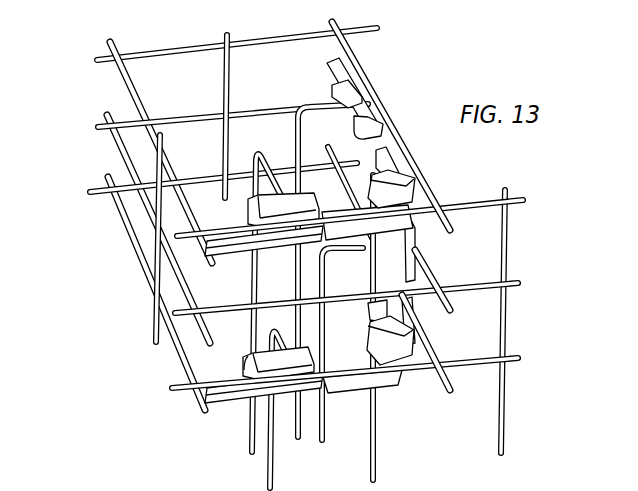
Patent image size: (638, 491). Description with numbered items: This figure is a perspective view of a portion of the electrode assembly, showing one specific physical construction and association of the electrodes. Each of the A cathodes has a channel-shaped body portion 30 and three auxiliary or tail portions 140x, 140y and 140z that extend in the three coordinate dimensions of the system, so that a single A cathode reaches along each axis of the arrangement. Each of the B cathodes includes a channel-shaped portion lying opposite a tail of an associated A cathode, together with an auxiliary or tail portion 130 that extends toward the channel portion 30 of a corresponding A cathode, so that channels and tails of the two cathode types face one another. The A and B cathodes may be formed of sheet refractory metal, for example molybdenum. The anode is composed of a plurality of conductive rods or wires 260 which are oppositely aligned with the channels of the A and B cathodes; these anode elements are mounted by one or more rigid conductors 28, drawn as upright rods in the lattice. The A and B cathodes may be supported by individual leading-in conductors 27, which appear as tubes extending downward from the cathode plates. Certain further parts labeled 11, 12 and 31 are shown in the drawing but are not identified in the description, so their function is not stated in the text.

The cable clip 11 is at (418, 188).
The cable clip 12 is at (378, 127).
The leading-in conductors 27 is at (275, 448).
The rigid conductors 28 is at (223, 78).
The channel-shaped body portion 30 is at (392, 350).
The clip bend 31 is at (247, 362).
The auxiliary or tail portion 130 is at (230, 393).
The auxiliary or tail portion 140x is at (350, 392).
The auxiliary or tail portion 140y is at (377, 317).
The auxiliary or tail portion 140z is at (413, 315).
The conductive rods or wires 260 is at (284, 165).